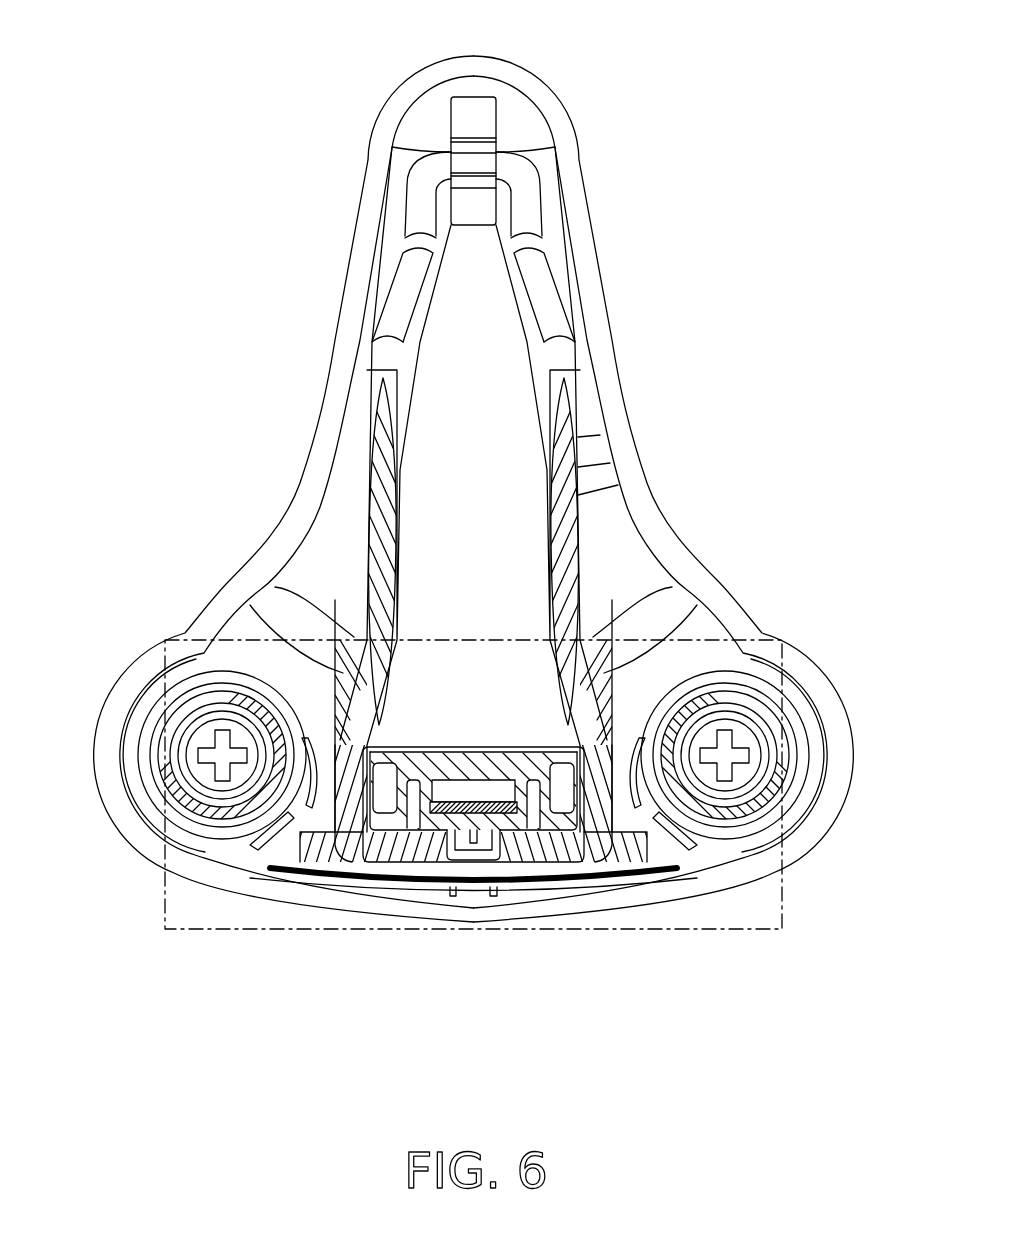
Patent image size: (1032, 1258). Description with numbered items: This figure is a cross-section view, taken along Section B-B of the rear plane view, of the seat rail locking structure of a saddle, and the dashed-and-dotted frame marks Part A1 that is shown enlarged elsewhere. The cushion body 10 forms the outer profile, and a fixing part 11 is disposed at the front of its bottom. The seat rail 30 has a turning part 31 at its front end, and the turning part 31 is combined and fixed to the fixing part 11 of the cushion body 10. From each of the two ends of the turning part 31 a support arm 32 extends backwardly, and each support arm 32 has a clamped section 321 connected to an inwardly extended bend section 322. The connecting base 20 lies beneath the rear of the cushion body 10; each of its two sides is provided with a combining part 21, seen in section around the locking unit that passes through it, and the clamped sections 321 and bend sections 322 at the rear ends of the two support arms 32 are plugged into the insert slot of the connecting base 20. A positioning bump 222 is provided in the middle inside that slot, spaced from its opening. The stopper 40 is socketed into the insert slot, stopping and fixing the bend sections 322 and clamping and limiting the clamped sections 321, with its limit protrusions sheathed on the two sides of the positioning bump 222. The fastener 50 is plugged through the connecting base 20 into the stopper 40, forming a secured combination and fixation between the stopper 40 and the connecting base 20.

The cushion body 10 is at (598, 297).
The fixing part 11 is at (477, 118).
The connecting base 20 is at (363, 884).
The combining part 21 is at (145, 755).
The seat rail 30 is at (582, 438).
The turning part 31 is at (437, 157).
The support arm 32 is at (380, 532).
The stopper 40 is at (418, 745).
The fastener 50 is at (503, 793).
The positioning bump 222 is at (473, 845).
The clamped section 321 is at (287, 842).
The bend section 322 is at (420, 847).
The Part A1 is at (225, 932).